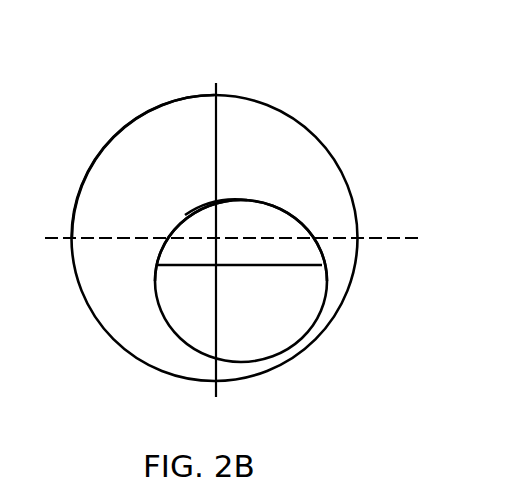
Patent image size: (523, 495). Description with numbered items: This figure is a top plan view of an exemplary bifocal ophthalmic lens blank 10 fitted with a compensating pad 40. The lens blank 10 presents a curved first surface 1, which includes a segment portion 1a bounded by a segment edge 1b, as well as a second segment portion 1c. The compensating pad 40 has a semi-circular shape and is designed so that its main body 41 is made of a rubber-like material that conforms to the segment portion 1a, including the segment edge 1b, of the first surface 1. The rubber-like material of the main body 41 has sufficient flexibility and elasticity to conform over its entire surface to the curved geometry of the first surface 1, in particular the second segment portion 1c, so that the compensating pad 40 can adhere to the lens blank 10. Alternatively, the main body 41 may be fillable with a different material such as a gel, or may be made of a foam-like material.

The bifocal ophthalmic lens blank 10 is at (418, 97).
The first surface 1 is at (333, 202).
The segment portion 1a is at (280, 327).
The segment edge 1b is at (303, 265).
The second segment portion 1c is at (113, 180).
The compensating pad 40 is at (238, 220).
The main body 41 is at (203, 223).